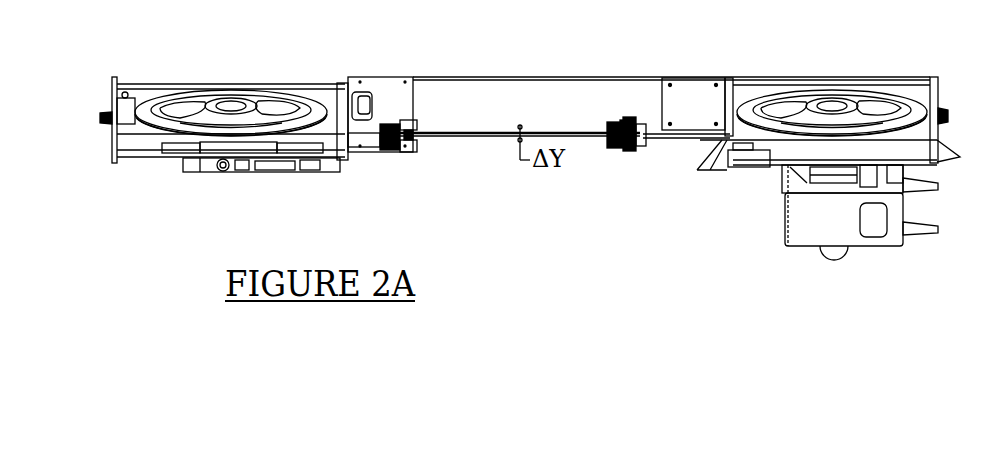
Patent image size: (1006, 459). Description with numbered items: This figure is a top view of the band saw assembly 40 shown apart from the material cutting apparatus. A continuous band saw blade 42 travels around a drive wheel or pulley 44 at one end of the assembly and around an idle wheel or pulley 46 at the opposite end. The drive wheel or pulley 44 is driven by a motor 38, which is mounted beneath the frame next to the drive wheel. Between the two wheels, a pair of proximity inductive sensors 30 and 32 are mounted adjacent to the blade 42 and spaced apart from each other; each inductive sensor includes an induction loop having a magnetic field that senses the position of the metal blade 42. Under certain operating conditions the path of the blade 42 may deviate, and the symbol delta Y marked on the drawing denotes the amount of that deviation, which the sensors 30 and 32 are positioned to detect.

The proximity inductive sensor 30 is at (642, 148).
The proximity inductive sensor 32 is at (391, 152).
The motor 38 is at (895, 213).
The band saw assembly 40 is at (593, 196).
The band saw blade 42 is at (506, 143).
The drive wheel or pulley 44 is at (868, 92).
The idle wheel or pulley 46 is at (190, 87).